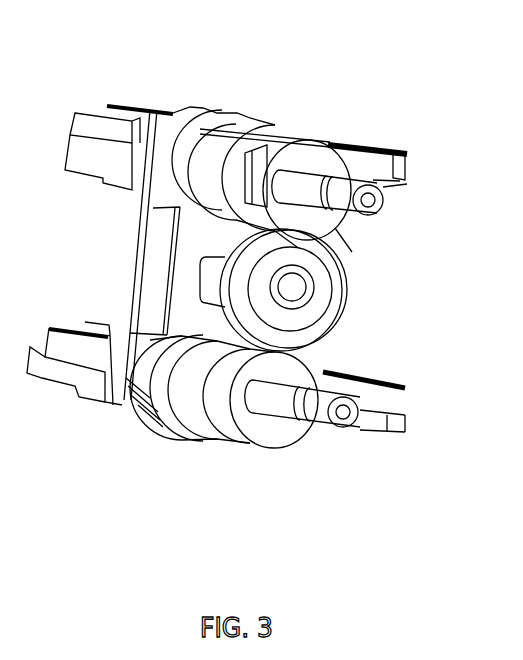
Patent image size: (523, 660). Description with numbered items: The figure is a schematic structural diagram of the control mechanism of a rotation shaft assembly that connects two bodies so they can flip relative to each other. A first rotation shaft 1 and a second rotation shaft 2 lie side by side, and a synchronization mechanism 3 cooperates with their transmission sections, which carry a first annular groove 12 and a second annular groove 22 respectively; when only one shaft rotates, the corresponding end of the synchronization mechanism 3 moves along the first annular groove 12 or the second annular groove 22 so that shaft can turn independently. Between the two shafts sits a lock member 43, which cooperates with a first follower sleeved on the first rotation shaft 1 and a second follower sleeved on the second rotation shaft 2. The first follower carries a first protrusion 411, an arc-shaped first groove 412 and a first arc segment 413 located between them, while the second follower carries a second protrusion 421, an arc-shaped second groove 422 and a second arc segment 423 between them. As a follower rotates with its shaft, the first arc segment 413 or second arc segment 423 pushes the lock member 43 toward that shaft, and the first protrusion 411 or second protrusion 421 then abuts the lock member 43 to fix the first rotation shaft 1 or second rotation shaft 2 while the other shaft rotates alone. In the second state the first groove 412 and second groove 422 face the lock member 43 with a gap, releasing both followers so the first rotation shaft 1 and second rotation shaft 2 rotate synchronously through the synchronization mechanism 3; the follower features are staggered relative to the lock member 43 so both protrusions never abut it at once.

The first rotation shaft 1 is at (372, 195).
The second rotation shaft 2 is at (343, 413).
The synchronization mechanism 3 is at (162, 287).
The first annular groove 12 is at (168, 186).
The second annular groove 22 is at (150, 386).
The lock member 43 is at (317, 298).
The first protrusion 411 is at (300, 238).
The first groove 412 is at (255, 183).
The first arc segment 413 is at (313, 140).
The second protrusion 421 is at (220, 407).
The second groove 422 is at (300, 352).
The second arc segment 423 is at (253, 437).